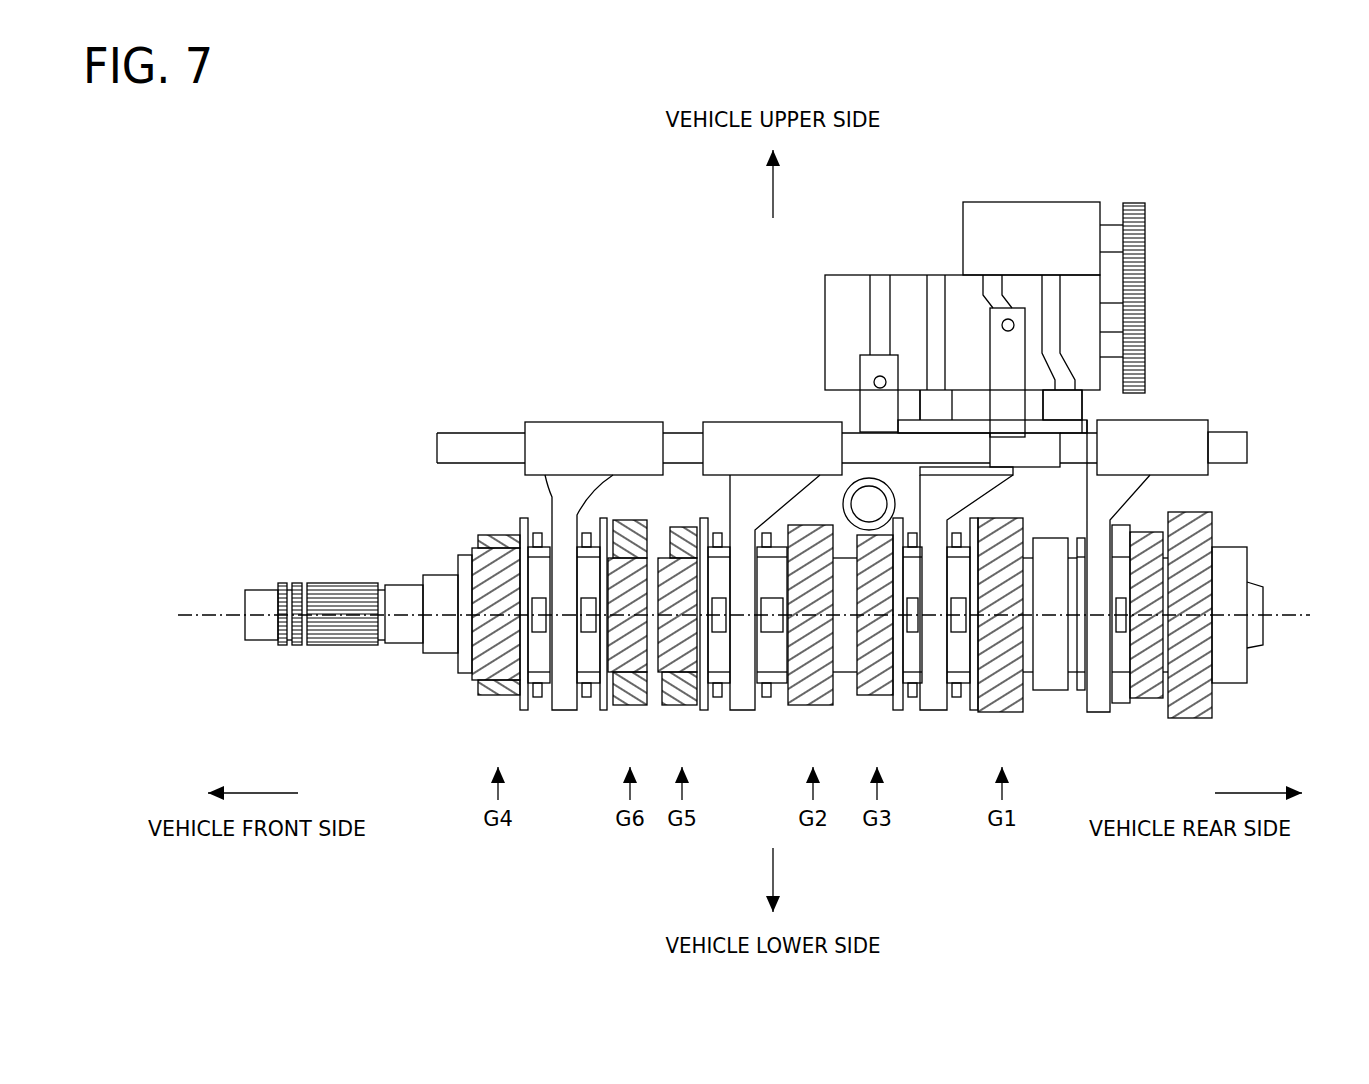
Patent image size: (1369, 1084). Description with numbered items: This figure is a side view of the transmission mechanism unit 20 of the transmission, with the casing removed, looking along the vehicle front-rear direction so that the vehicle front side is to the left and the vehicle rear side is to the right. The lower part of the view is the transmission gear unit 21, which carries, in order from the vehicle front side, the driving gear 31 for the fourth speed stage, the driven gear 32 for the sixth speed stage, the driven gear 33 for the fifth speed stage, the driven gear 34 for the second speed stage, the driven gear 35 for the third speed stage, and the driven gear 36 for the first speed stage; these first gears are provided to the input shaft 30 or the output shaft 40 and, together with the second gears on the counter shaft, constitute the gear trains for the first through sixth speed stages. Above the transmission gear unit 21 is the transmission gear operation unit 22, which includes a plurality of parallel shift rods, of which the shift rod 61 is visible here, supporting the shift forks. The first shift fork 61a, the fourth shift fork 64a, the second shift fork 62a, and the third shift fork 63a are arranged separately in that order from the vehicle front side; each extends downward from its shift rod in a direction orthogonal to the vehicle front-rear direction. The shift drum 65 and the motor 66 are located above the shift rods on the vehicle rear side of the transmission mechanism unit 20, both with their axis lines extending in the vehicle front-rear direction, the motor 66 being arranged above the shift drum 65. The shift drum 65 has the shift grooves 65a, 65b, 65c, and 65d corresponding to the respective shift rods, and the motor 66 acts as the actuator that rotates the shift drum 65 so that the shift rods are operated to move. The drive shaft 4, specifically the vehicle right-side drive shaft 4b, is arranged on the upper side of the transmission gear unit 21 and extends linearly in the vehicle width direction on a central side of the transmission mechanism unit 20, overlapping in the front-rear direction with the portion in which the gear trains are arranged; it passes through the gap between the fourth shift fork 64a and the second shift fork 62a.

The drive shaft 4 is at (830, 450).
The drive shaft 4b is at (855, 483).
The transmission mechanism unit 20 is at (746, 638).
The transmission gear unit 21 is at (454, 699).
The transmission gear operation unit 22 is at (813, 457).
The input shaft 30 is at (268, 645).
The driving gear for the fourth speed stage 31 is at (498, 695).
The driven gear for the sixth speed stage 32 is at (632, 706).
The driven gear for the fifth speed stage 33 is at (676, 706).
The driven gear for the second speed stage 34 is at (808, 706).
The driven gear for the third speed stage 35 is at (870, 697).
The driven gear for the first speed stage 36 is at (995, 714).
The output shaft 40 is at (1263, 640).
The shift rod 61 is at (437, 452).
The first shift fork 61a is at (565, 712).
The second shift fork 62a is at (935, 712).
The third shift fork 63a is at (1100, 714).
The fourth shift fork 64a is at (745, 712).
The shift drum 65 is at (825, 306).
The shift groove 65a is at (992, 277).
The shift groove 65b is at (880, 277).
The shift groove 65c is at (938, 277).
The shift groove 65d is at (1050, 277).
The motor 66 is at (1043, 202).